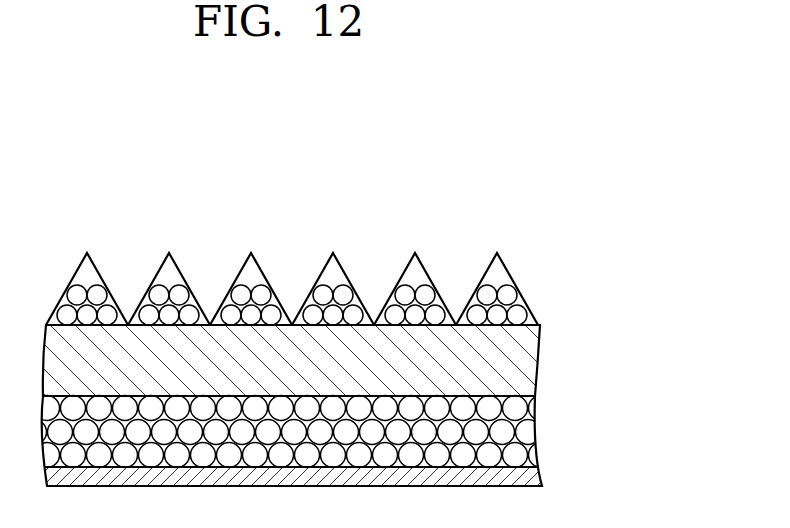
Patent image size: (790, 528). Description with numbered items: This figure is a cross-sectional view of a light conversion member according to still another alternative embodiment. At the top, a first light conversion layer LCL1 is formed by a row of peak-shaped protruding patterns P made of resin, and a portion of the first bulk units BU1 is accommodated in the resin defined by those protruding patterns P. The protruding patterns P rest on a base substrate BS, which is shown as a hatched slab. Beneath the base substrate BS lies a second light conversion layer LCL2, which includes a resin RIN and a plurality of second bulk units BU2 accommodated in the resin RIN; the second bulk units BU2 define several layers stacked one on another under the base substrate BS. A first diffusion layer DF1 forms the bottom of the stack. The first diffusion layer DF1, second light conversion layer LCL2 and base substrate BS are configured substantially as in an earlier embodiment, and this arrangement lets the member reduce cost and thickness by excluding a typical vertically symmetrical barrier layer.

The protruding patterns P is at (498, 275).
The first bulk units BU1 is at (518, 312).
The base substrate BS is at (532, 362).
The second bulk units BU2 is at (518, 410).
The resin RIN is at (515, 438).
The first diffusion layer DF1 is at (532, 478).
The first light conversion layer LCL1 is at (630, 255).
The second light conversion layer LCL2 is at (630, 405).